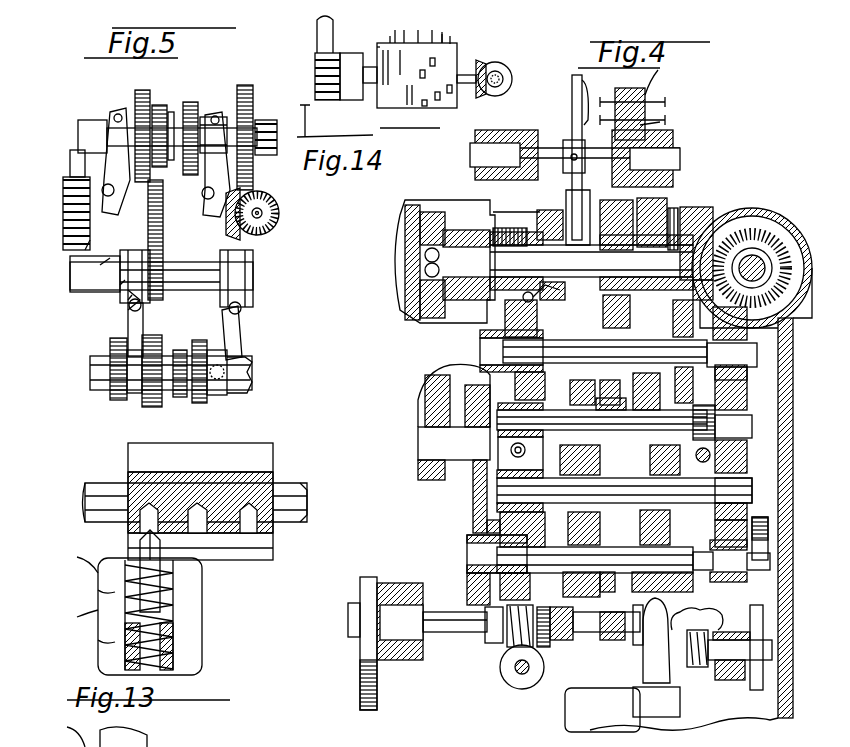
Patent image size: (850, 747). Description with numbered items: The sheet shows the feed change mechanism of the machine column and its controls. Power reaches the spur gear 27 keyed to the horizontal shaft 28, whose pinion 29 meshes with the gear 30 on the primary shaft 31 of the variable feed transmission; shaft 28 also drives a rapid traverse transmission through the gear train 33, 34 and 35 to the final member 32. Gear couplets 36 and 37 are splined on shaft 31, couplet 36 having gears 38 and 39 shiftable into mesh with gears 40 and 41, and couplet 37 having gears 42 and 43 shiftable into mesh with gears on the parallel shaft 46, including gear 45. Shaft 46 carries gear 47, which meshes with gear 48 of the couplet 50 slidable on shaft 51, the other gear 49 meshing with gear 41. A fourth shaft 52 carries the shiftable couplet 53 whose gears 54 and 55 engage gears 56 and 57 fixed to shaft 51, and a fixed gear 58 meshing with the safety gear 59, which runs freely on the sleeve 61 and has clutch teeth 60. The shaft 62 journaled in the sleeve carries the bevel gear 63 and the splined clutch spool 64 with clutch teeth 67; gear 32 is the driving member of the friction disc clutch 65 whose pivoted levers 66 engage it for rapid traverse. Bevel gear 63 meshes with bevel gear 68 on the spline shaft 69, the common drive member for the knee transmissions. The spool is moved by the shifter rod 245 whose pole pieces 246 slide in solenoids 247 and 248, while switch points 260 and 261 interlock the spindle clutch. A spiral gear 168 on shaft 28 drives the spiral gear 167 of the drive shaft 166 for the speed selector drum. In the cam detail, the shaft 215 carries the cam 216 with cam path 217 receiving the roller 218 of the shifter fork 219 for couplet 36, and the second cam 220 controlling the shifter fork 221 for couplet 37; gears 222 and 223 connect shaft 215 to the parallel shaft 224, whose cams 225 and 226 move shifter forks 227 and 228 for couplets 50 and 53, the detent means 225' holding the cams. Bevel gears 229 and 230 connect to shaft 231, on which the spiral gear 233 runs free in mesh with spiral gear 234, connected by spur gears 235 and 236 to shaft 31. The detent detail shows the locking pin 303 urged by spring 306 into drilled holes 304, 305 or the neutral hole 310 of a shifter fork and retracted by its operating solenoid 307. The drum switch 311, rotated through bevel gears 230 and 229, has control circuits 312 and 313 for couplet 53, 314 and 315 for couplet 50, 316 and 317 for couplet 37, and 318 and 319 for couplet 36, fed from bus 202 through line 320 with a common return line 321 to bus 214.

In FIG. 4, the spur gear 27 is at (370, 580).
In FIG. 4, the horizontal shaft 28 is at (455, 632).
In FIG. 4, the pinion 29 is at (530, 648).
In FIG. 4, the gear 30 is at (475, 598).
In FIG. 4, the primary shaft 31 is at (470, 555).
In FIG. 4, the final member 32 is at (428, 380).
In FIG. 4, the gear 33 is at (470, 505).
In FIG. 4, the gear 34 is at (472, 515).
In FIG. 4, the gear 35 is at (495, 645).
In FIG. 5, the gear couplet 36 is at (120, 402).
In FIG. 4, the gear couplet 36 is at (595, 540).
In FIG. 5, the gear couplet 37 is at (205, 400).
In FIG. 4, the gear couplet 37 is at (670, 535).
In FIG. 4, the gear 38 is at (565, 585).
In FIG. 4, the gear 39 is at (600, 583).
In FIG. 4, the gear 40 is at (525, 450).
In FIG. 4, the gear 41 is at (585, 460).
In FIG. 4, the gear 42 is at (648, 620).
In FIG. 4, the gear 43 is at (650, 588).
In FIG. 4, the gear 45 is at (700, 450).
In FIG. 4, the parallel shaft 46 is at (752, 490).
In FIG. 4, the gear 47 is at (575, 520).
In FIG. 4, the gear 48 is at (580, 382).
In FIG. 4, the gear 49 is at (598, 405).
In FIG. 5, the gear couplet 50 is at (137, 98).
In FIG. 4, the gear couplet 50 is at (575, 392).
In FIG. 4, the shaft 51 is at (745, 428).
In FIG. 4, the fourth shaft 52 is at (757, 355).
In FIG. 5, the shiftable couplet 53 is at (245, 105).
In FIG. 4, the shiftable couplet 53 is at (683, 325).
In FIG. 4, the gear 54 is at (645, 380).
In FIG. 4, the gear 55 is at (683, 378).
In FIG. 4, the gear 56 is at (635, 390).
In FIG. 4, the gear 57 is at (712, 408).
In FIG. 4, the fixed gear 58 is at (600, 340).
In FIG. 4, the safety gear 59 is at (650, 205).
In FIG. 4, the clutch teeth 60 is at (612, 212).
In FIG. 4, the sleeve 61 is at (673, 215).
In FIG. 4, the shaft 62 is at (695, 215).
In FIG. 4, the bevel gear 63 is at (715, 222).
In FIG. 4, the clutch spool 64 is at (550, 212).
In FIG. 4, the friction disc clutch 65 is at (515, 228).
In FIG. 4, the pivoted levers 66 is at (532, 300).
In FIG. 4, the clutch teeth 67 is at (580, 170).
In FIG. 4, the bevel gear 68 is at (760, 225).
In FIG. 4, the spline shaft 69 is at (780, 240).
In FIG. 4, the drive shaft 166 is at (520, 675).
In FIG. 4, the spiral gear 167 is at (545, 680).
In FIG. 4, the spiral gear 168 is at (520, 628).
In FIG. 14, the main bus line 202 is at (438, 118).
In FIG. 14, the main bus 214 is at (365, 135).
In FIG. 5, the shaft 215 is at (120, 285).
In FIG. 5, the cam 216 is at (128, 300).
In FIG. 5, the cam path 217 is at (140, 300).
In FIG. 5, the roller 218 is at (135, 270).
In FIG. 5, the pivoted shifter fork 219 is at (130, 325).
In FIG. 5, the second cam 220 is at (252, 280).
In FIG. 5, the shifter fork 221 is at (240, 325).
In FIG. 5, the gear 222 is at (158, 295).
In FIG. 5, the gear 223 is at (167, 212).
In FIG. 5, the parallel shaft 224 is at (100, 265).
In FIG. 5, the cam 225 is at (70, 272).
In FIG. 5, the detent means 225' is at (67, 191).
In FIG. 5, the cam 226 is at (230, 245).
In FIG. 5, the shifter fork 227 is at (105, 135).
In FIG. 5, the shifter fork 228 is at (245, 190).
In FIG. 5, the bevel gear 229 is at (258, 195).
In FIG. 14, the bevel gear 229 is at (480, 60).
In FIG. 5, the bevel gear 230 is at (270, 222).
In FIG. 14, the bevel gear 230 is at (497, 64).
In FIG. 5, the shaft 231 is at (272, 210).
In FIG. 14, the shaft 231 is at (504, 76).
In FIG. 4, the spiral gear 233 is at (695, 668).
In FIG. 4, the spiral gear 234 is at (745, 662).
In FIG. 4, the spur gear 235 is at (763, 612).
In FIG. 4, the spur gear 236 is at (770, 530).
In FIG. 4, the shifter rod 245 is at (572, 140).
In FIG. 4, the pole pieces 246 is at (680, 160).
In FIG. 4, the solenoid 247 is at (505, 130).
In FIG. 4, the solenoid 248 is at (673, 135).
In FIG. 4, the switch point 260 is at (632, 92).
In FIG. 4, the switch point 261 is at (615, 122).
In FIG. 13, the locking pin 303 is at (165, 560).
In FIG. 13, the drilled hole 304 is at (150, 475).
In FIG. 13, the drilled hole 305 is at (270, 470).
In FIG. 13, the spring 306 is at (175, 642).
In FIG. 13, the operating solenoid 307 is at (202, 600).
In FIG. 13, the additional drilled hole 310 is at (230, 475).
In FIG. 14, the second drum switch 311 is at (458, 50).
In FIG. 14, the control circuit 312 is at (380, 47).
In FIG. 14, the control circuit 313 is at (390, 45).
In FIG. 14, the control circuit 314 is at (395, 40).
In FIG. 14, the control circuit 315 is at (404, 40).
In FIG. 14, the control circuit 316 is at (418, 40).
In FIG. 14, the control circuit 317 is at (432, 40).
In FIG. 14, the control circuit 318 is at (442, 42).
In FIG. 14, the control circuit 319 is at (450, 44).
In FIG. 14, the line 320 is at (455, 105).
In FIG. 14, the common return line 321 is at (307, 112).